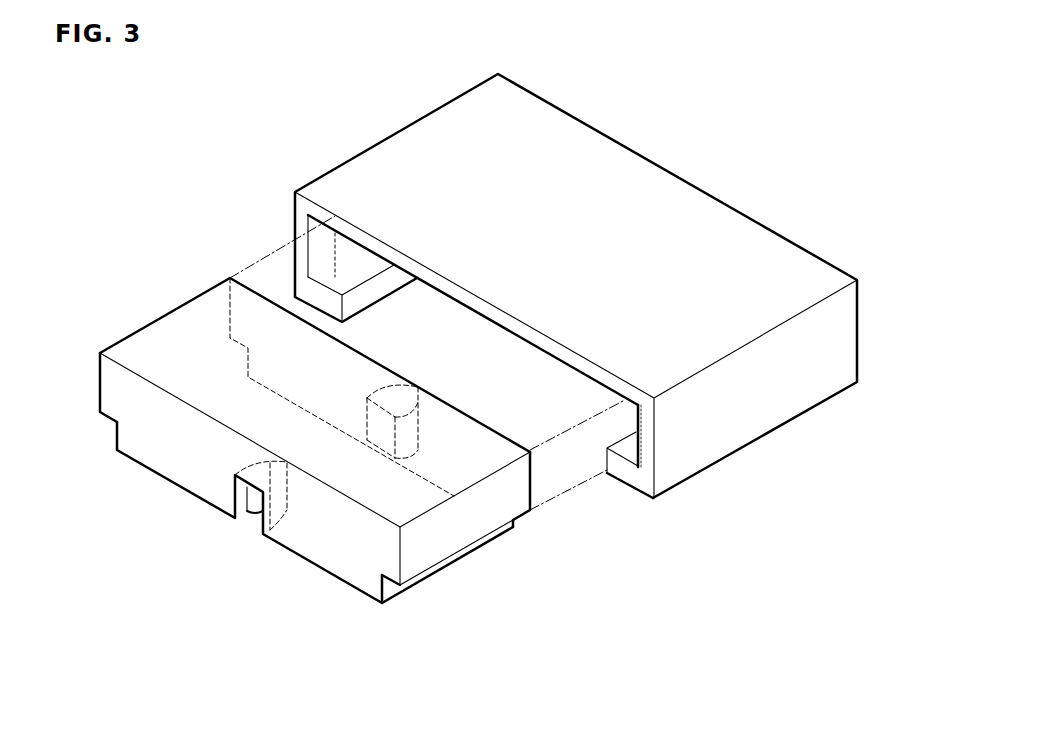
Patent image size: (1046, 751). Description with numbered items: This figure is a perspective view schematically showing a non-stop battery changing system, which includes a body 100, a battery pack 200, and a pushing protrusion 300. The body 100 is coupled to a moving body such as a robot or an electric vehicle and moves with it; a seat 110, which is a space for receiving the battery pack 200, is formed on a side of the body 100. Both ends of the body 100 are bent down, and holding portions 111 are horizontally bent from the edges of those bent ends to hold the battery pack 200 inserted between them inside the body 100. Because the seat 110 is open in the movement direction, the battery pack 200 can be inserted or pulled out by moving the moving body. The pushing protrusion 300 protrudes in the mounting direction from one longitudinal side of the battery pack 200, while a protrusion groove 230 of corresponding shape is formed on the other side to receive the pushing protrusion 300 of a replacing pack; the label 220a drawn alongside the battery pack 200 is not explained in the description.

The body 100 is at (532, 325).
The seat 110 is at (562, 380).
The holding portions 111 is at (302, 297).
The battery pack 200 is at (296, 463).
The base of block 220a is at (315, 512).
The protrusion groove 230 is at (258, 517).
The pushing protrusion 300 is at (415, 424).